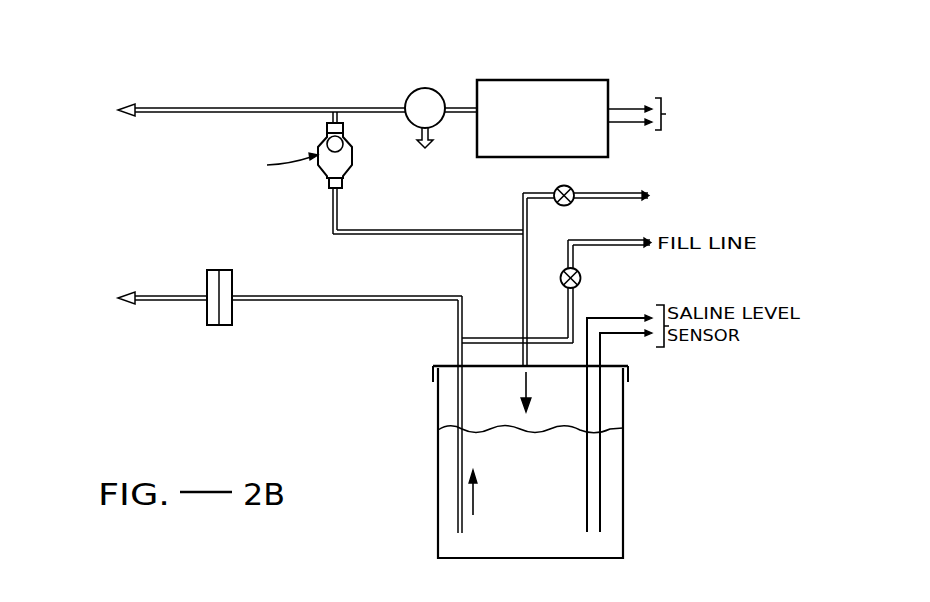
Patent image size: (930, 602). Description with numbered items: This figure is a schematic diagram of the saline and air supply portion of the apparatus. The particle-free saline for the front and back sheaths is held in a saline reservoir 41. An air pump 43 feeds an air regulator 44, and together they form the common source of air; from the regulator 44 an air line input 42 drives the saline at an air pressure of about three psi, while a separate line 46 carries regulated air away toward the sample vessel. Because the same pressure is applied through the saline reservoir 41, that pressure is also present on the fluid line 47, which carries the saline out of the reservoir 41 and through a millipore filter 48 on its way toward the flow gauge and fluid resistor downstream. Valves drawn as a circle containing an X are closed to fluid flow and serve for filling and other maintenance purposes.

The saline reservoir 41 is at (443, 527).
The air line input 42 is at (522, 315).
The air pump 43 is at (573, 88).
The air regulator 44 is at (376, 117).
The line 46 is at (204, 107).
The fluid line 47 is at (170, 294).
The millipore filter 48 is at (282, 338).